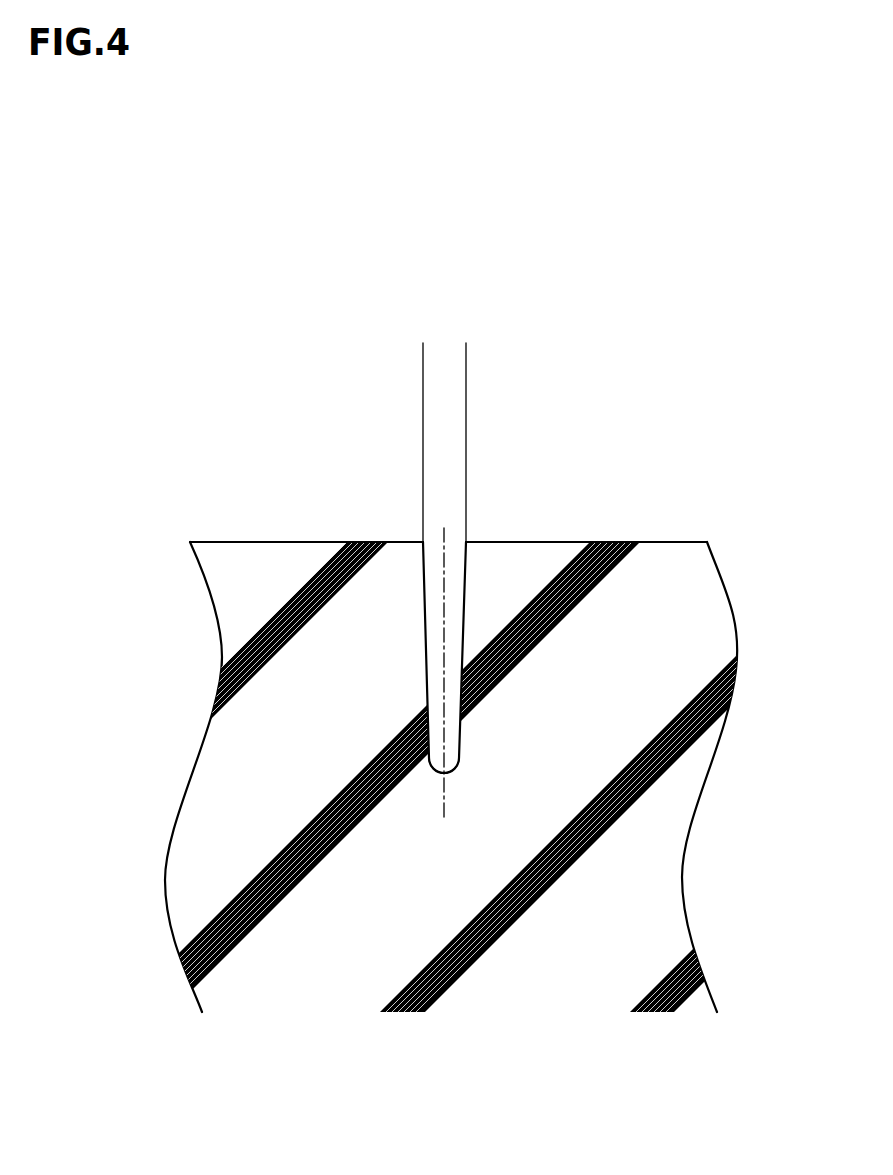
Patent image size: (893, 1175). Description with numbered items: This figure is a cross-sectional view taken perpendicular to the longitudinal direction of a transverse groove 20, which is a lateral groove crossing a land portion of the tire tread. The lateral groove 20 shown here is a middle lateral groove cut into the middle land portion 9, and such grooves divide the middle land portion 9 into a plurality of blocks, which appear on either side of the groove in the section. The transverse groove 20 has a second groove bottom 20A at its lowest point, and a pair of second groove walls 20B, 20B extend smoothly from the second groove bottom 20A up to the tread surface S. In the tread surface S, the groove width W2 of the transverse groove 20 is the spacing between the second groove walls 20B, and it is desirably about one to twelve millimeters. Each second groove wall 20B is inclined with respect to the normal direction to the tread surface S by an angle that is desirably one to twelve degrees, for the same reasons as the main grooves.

The middle land portion 9 is at (363, 696).
The tread surface S is at (650, 540).
The lateral groove 20 is at (447, 510).
The second groove wall 20B is at (425, 583).
The second groove bottom 20A is at (437, 777).
The groove width W2 is at (500, 349).